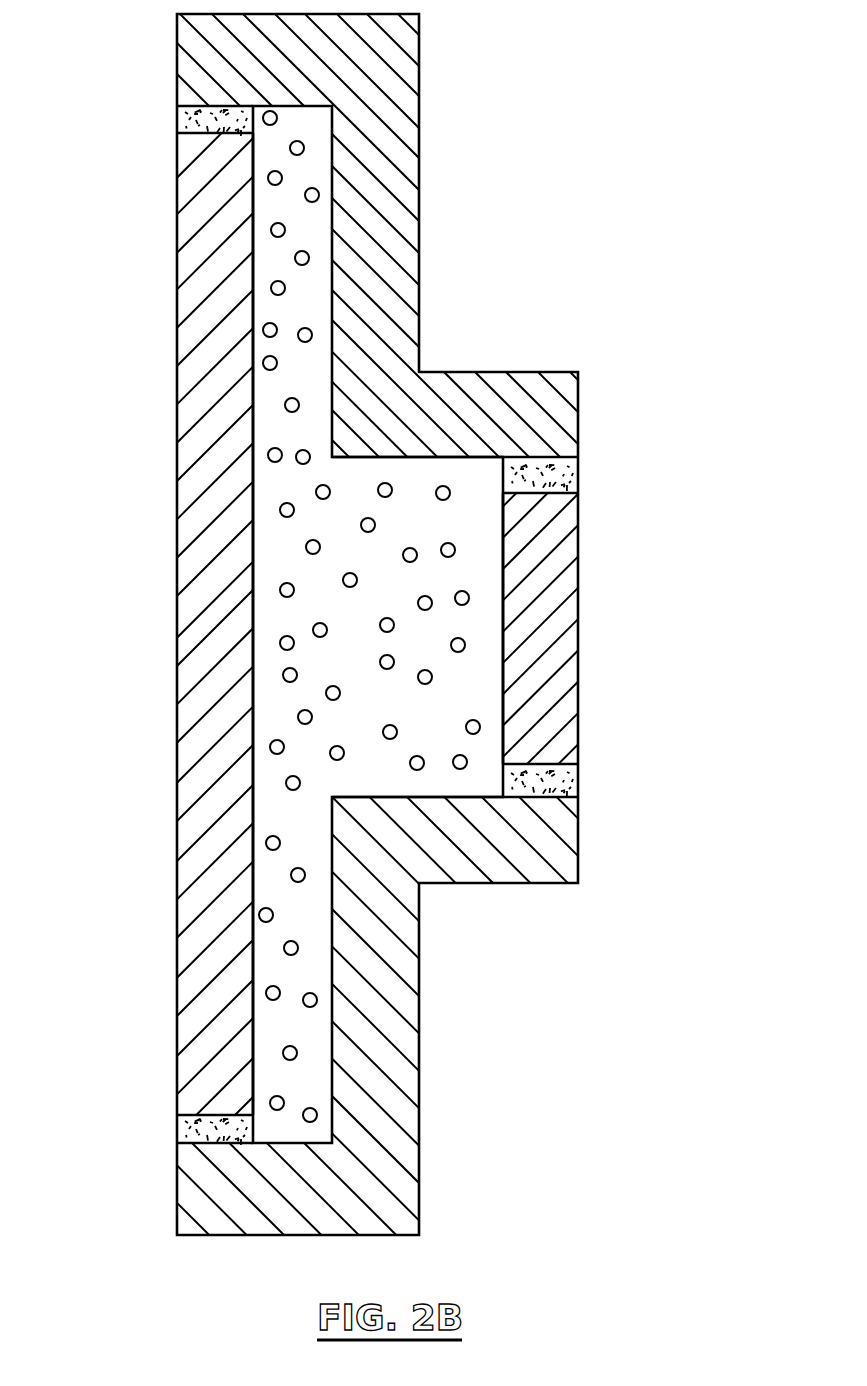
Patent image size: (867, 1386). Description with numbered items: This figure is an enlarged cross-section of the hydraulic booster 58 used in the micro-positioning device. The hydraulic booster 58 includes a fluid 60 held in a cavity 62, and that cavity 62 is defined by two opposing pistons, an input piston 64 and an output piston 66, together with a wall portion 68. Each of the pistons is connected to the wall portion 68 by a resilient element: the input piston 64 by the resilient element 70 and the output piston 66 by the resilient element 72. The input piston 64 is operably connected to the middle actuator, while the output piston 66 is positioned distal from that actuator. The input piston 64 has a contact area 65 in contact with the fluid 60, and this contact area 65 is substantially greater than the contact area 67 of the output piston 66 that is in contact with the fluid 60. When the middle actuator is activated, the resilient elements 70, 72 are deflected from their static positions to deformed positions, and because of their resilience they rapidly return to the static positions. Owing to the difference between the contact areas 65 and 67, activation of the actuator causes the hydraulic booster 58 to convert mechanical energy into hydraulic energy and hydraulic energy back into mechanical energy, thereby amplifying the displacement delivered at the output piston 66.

The hydraulic booster 58 is at (436, 68).
The fluid 60 is at (391, 715).
The cavity 62 is at (428, 472).
The input piston 64 is at (177, 692).
The contact area 65 is at (250, 548).
The output piston 66 is at (578, 582).
The contact area 67 is at (498, 555).
The wall portion 68 is at (420, 1097).
The resilient element 70 is at (178, 122).
The resilient element 72 is at (577, 472).